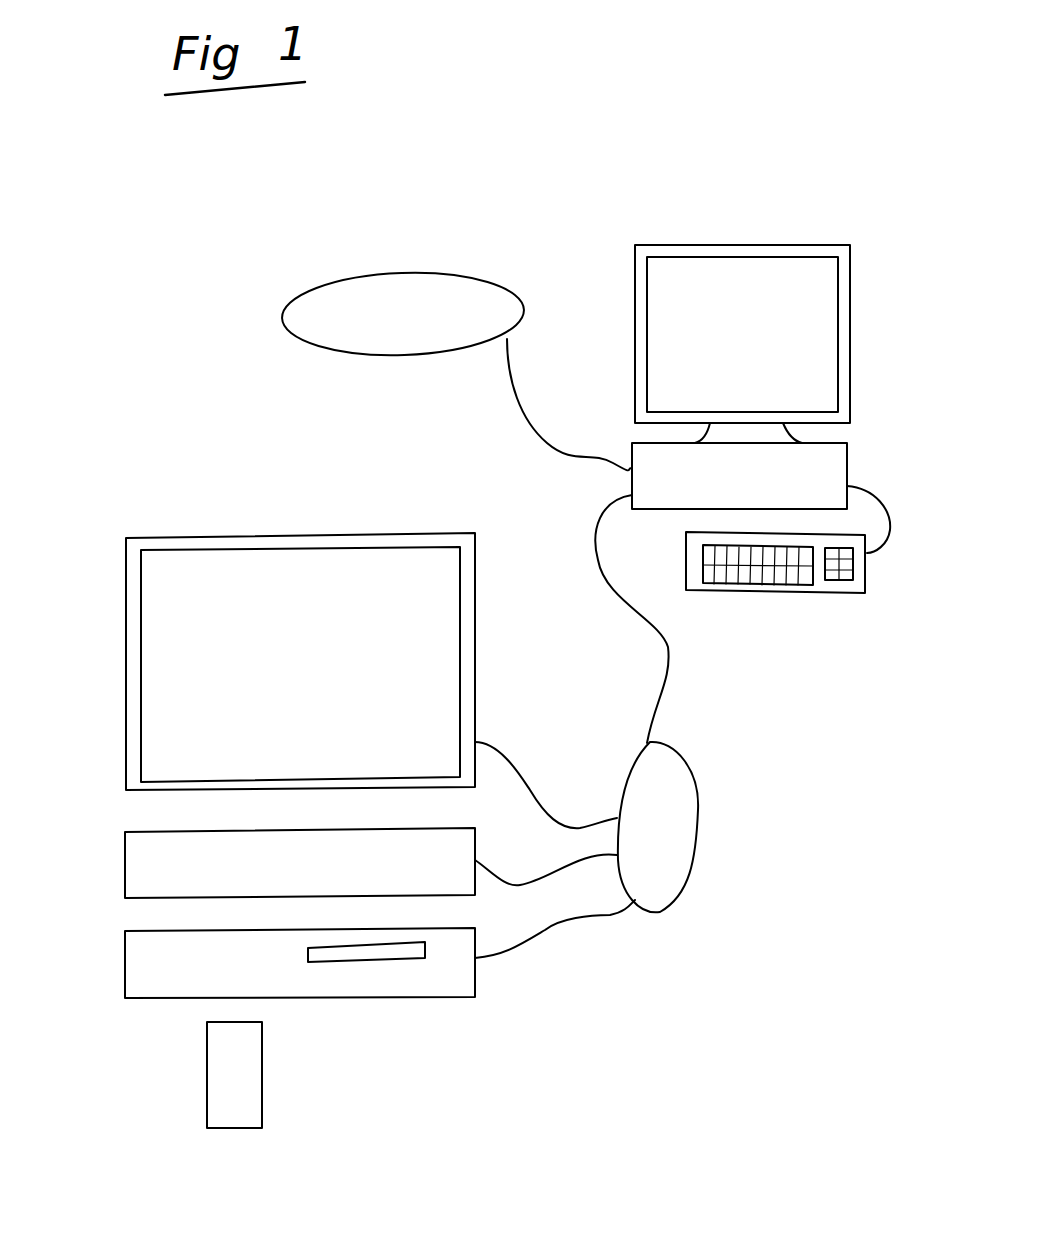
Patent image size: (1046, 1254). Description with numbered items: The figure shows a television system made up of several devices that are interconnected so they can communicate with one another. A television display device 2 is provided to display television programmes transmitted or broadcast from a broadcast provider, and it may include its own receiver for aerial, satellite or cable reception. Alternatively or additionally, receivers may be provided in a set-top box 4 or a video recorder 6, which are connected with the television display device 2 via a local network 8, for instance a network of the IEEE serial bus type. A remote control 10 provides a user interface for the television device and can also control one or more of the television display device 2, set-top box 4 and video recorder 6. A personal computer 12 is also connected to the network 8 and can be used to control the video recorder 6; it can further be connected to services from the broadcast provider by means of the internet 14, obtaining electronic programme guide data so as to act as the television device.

The television display device 2 is at (253, 570).
The set-top box 4 is at (158, 838).
The video recorder 6 is at (417, 987).
The local network 8 is at (677, 840).
The remote control 10 is at (245, 1092).
The personal computer 12 is at (813, 610).
The internet 14 is at (448, 293).